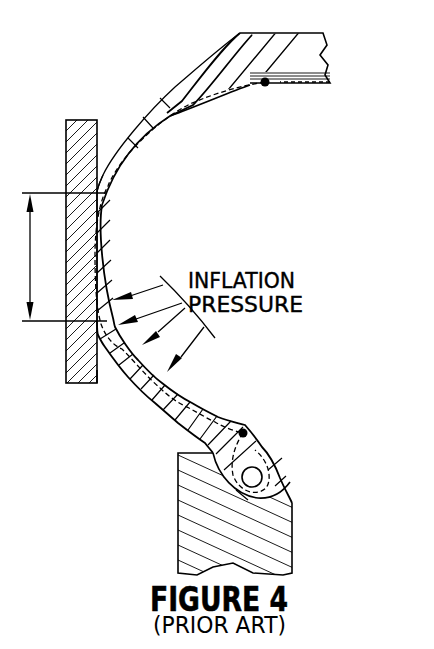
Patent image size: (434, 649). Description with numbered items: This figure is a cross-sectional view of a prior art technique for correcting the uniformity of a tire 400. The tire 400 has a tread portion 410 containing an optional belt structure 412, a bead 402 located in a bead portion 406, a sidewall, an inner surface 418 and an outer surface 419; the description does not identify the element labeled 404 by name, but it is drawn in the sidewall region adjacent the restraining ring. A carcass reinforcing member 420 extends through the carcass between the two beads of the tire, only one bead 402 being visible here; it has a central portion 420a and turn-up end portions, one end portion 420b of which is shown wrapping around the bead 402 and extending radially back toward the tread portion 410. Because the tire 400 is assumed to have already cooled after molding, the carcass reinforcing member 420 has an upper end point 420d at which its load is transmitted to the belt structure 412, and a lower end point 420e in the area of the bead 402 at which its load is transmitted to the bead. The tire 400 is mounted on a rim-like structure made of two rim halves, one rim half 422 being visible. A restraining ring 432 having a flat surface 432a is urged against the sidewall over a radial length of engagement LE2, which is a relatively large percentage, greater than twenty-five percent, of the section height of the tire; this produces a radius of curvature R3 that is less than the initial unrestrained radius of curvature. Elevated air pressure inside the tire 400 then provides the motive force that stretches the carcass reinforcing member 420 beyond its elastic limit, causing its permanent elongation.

The tire 400 is at (183, 77).
The bead 402 is at (255, 472).
The sidewall 404 is at (128, 123).
The bead portion 406 is at (302, 472).
The tread portion 410 is at (257, 33).
The belt structure 412 is at (341, 77).
The inner surface 418 is at (166, 109).
The outer surface 419 is at (160, 98).
The carcass reinforcing member 420 is at (126, 251).
The central portion 420a is at (290, 86).
The end portion 420b is at (233, 398).
The upper end point 420d is at (267, 84).
The lower end point 420e is at (246, 428).
The rim half 422 is at (270, 543).
The restraining ring 432 is at (82, 367).
The flat surface 432a is at (97, 383).
The radius of curvature R3 is at (160, 146).
The radial length of engagement LE2 is at (60, 257).